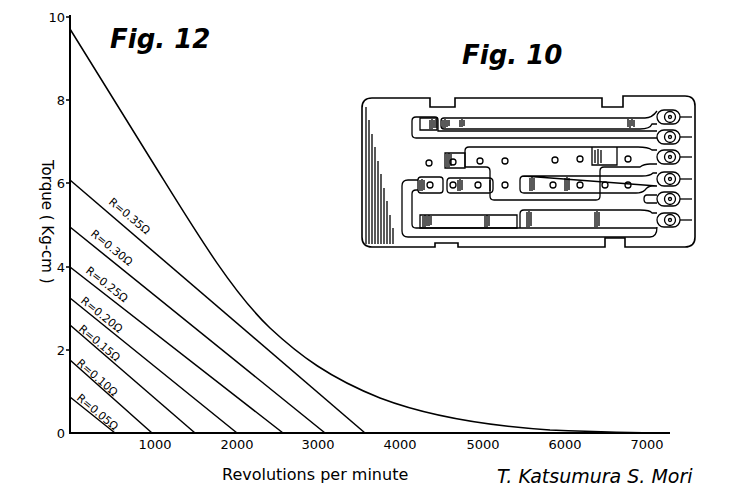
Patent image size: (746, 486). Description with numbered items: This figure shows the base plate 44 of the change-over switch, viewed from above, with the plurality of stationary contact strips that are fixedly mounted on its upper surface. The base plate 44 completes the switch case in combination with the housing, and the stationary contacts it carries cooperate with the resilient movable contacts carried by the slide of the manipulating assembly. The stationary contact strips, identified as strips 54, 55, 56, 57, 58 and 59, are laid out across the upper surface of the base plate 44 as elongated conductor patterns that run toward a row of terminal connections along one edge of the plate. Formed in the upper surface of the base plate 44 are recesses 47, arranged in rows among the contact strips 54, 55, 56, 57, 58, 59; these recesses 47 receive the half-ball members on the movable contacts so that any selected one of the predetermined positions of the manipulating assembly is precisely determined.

The base plate 44 is at (594, 103).
The recesses 47 is at (508, 162).
The conductor strip 54 is at (538, 122).
The conductor strip 55 is at (424, 121).
The conductor pad 56 is at (445, 160).
The conductor pattern 57 is at (469, 190).
The conductor pattern 58 is at (420, 183).
The conductor strip 59 is at (466, 222).